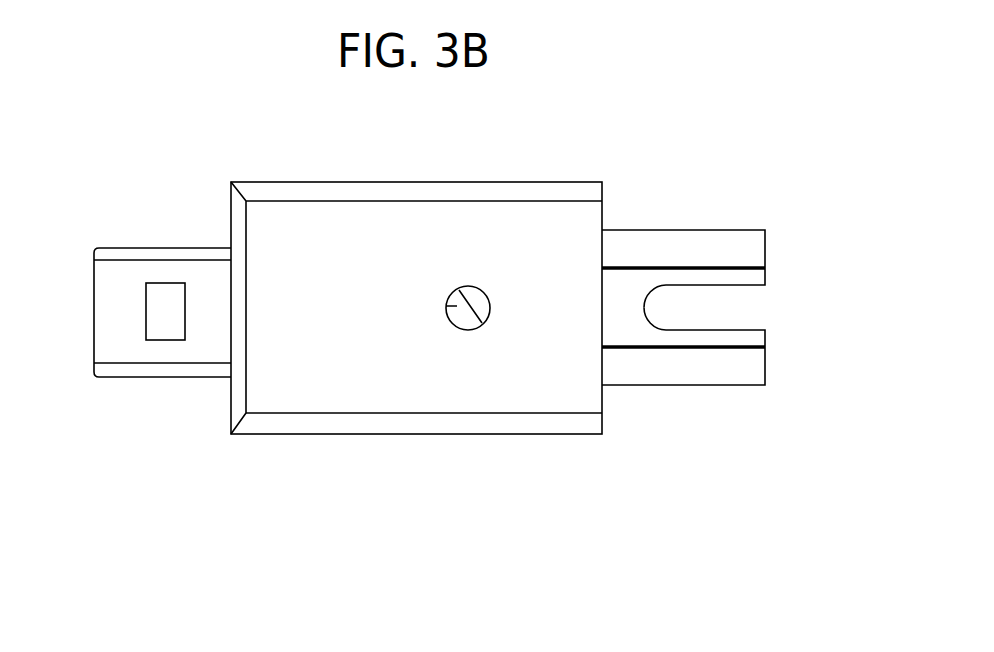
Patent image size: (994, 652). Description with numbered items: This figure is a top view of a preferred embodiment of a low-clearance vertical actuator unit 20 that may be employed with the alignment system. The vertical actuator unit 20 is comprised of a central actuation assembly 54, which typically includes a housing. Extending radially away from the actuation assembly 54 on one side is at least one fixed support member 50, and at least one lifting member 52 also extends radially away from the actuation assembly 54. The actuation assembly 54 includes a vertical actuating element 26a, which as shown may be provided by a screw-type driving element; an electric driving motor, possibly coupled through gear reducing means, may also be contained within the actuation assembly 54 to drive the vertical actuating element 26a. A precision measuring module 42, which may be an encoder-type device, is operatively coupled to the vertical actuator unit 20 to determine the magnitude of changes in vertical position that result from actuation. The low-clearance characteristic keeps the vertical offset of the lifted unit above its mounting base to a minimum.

The vertical actuator unit 20 is at (282, 522).
The vertical actuating element 26a is at (446, 306).
The precision measuring module 42 is at (182, 370).
The fixed support member 50 is at (753, 252).
The lifting member 52 is at (753, 337).
The actuation assembly 54 is at (357, 403).